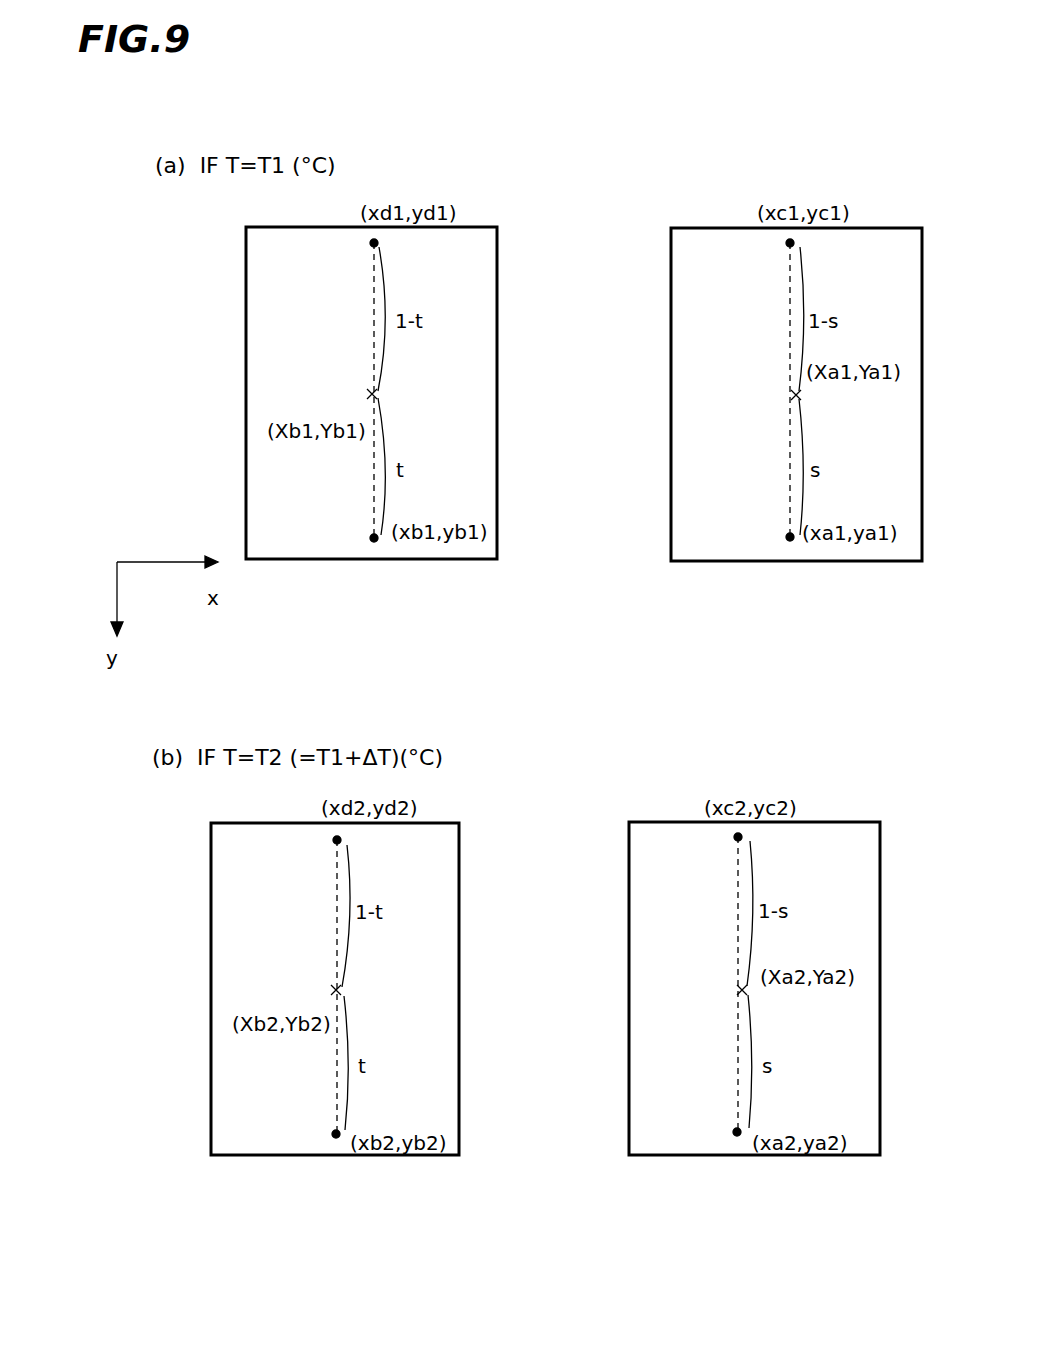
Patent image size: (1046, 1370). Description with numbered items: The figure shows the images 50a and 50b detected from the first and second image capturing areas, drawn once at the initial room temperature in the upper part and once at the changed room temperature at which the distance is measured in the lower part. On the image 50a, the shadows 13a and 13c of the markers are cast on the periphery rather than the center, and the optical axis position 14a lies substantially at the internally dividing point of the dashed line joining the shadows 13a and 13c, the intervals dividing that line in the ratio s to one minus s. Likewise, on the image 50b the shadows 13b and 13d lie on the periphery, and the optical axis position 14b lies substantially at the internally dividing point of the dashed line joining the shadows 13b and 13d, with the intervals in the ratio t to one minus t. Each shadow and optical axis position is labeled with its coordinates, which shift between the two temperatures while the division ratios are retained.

The shadow of marker 13a is at (778, 537).
The shadow of marker 13b is at (372, 538).
The shadow of marker 13c is at (788, 245).
The shadow of marker 13d is at (372, 244).
The optical axis position 14a is at (778, 398).
The optical axis position 14b is at (378, 394).
The image 50a is at (760, 562).
The image 50b is at (346, 561).